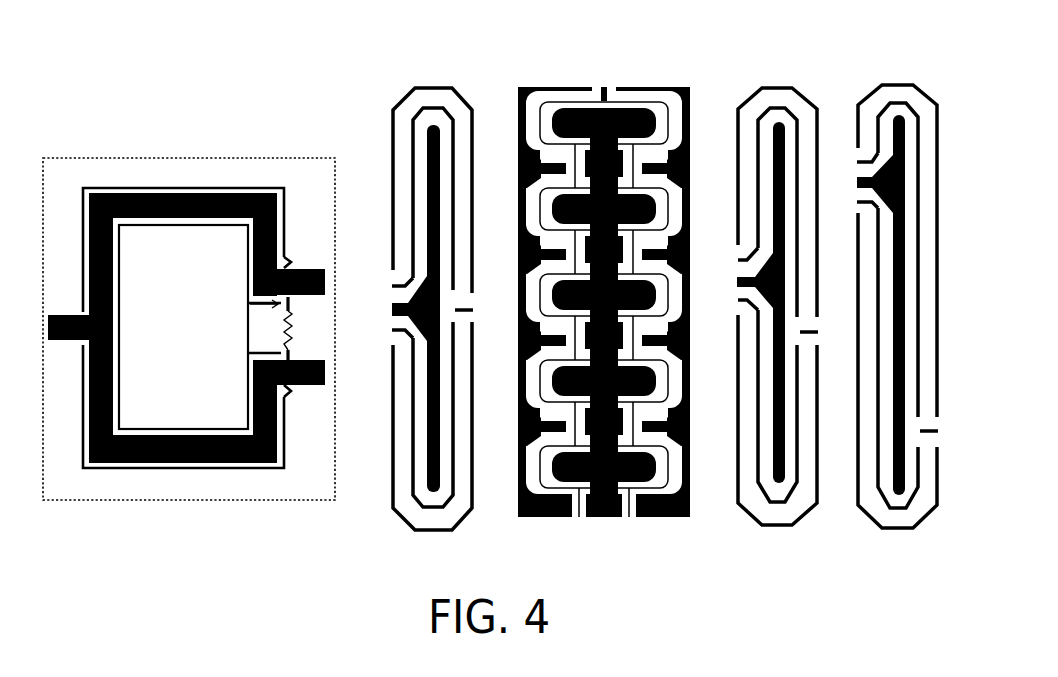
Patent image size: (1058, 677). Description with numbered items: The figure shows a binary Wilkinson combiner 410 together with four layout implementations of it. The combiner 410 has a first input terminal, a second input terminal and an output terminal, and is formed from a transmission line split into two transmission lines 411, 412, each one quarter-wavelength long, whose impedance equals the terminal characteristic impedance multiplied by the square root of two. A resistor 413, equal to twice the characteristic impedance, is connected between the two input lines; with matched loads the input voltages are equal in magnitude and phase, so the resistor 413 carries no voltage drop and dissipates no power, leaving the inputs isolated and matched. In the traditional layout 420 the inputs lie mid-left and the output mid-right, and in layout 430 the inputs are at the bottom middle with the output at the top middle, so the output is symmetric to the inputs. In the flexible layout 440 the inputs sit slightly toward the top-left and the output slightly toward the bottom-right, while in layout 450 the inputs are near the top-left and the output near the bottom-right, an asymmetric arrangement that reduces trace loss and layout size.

The binary Wilkinson combiner 410 is at (181, 158).
The transmission line 411 is at (186, 214).
The transmission line 412 is at (177, 448).
The resistor 413 is at (278, 330).
The layout 420 is at (431, 87).
The layout 430 is at (555, 88).
The layout 440 is at (780, 87).
The layout 450 is at (899, 84).